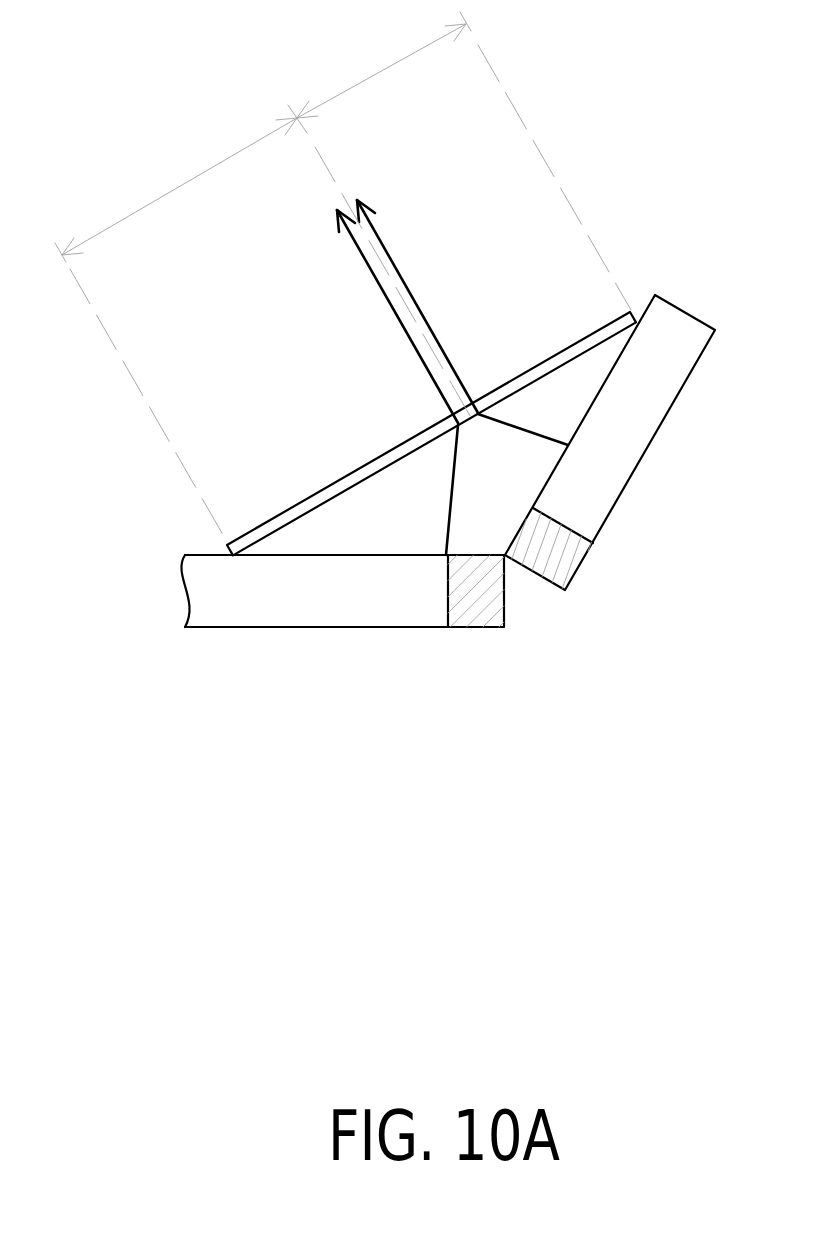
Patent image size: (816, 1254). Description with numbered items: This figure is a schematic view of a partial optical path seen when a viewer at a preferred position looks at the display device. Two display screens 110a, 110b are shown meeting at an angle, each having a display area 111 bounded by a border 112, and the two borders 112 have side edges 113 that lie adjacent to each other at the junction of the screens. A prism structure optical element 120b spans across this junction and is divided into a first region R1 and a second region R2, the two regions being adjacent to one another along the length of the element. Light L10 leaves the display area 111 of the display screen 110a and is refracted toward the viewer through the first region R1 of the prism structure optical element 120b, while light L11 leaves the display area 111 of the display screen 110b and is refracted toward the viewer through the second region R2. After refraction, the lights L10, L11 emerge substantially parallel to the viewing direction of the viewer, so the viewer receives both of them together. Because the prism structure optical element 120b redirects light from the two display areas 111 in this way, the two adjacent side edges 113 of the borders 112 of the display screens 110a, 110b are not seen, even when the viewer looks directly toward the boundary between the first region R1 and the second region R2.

The display screen 110a is at (478, 715).
The display screen 110b is at (605, 448).
The display area 111 is at (448, 562).
The border 112 is at (578, 735).
The side edge 113 is at (503, 643).
The prism structure optical element 120b is at (145, 510).
The light L10 is at (374, 277).
The light L11 is at (396, 267).
The first region R1 is at (264, 322).
The second region R2 is at (464, 161).